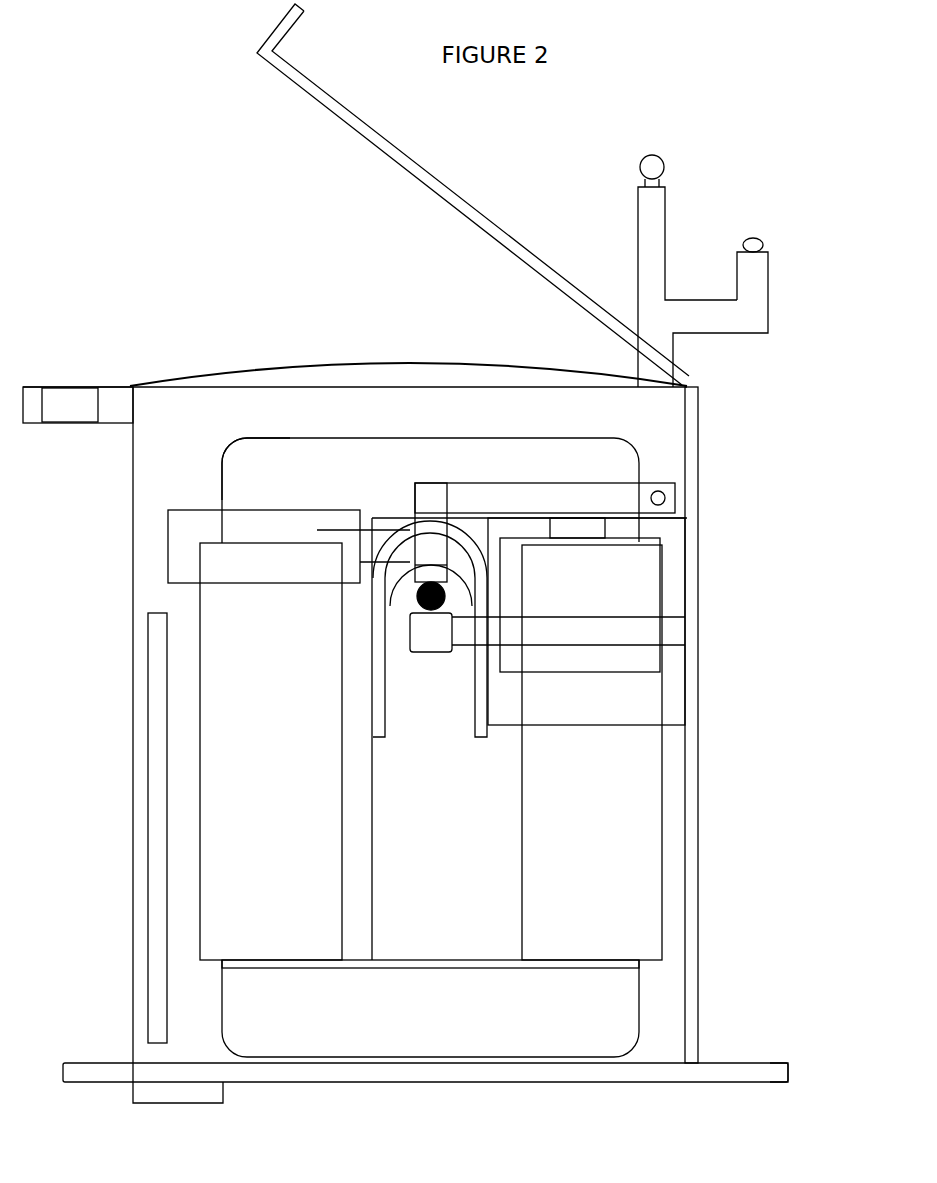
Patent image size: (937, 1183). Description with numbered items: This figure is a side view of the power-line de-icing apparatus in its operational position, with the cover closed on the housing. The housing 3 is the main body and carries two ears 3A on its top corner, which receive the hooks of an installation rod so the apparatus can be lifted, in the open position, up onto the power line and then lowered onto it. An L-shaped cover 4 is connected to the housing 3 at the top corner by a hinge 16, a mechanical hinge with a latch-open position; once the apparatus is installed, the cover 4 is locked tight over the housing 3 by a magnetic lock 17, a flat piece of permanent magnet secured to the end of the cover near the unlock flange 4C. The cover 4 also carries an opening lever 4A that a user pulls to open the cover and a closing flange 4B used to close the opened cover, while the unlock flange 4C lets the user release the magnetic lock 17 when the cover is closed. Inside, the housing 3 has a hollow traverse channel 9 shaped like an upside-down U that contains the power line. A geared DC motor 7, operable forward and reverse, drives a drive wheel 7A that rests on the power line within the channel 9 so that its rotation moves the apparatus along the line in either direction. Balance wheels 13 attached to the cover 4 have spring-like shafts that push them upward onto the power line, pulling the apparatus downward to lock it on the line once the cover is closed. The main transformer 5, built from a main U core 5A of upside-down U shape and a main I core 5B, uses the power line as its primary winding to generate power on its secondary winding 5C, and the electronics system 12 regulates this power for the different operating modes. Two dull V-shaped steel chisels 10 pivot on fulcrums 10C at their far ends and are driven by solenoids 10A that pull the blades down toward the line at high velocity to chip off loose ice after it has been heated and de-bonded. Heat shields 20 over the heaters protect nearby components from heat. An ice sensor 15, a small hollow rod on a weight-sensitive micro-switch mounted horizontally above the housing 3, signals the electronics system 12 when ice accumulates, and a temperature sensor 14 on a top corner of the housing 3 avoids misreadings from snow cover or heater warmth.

The housing 3 is at (232, 400).
The ears 3A is at (67, 392).
The cover 4 is at (726, 1076).
The opening lever 4A is at (285, 57).
The closing flange 4B is at (782, 1058).
The unlock flange 4C is at (97, 1067).
The main transformer 5 is at (440, 453).
The main "U" core 5A is at (240, 478).
The main "I" core 5B is at (440, 1010).
The secondary winding 5C is at (600, 877).
The motor 7 is at (265, 530).
The drive wheel 7A is at (432, 503).
The hollow traverse channel 9 is at (407, 693).
The chisels 10 is at (612, 500).
The solenoid 10A is at (612, 575).
The fulcrums 10C is at (661, 505).
The electronics system 12 is at (163, 910).
The balance wheels 13 is at (415, 638).
The temperature sensor 14 is at (652, 158).
The ice sensor 15 is at (748, 243).
The hinge 16 is at (698, 390).
The magnetic lock 17 is at (223, 1107).
The heat shields 20 is at (393, 530).